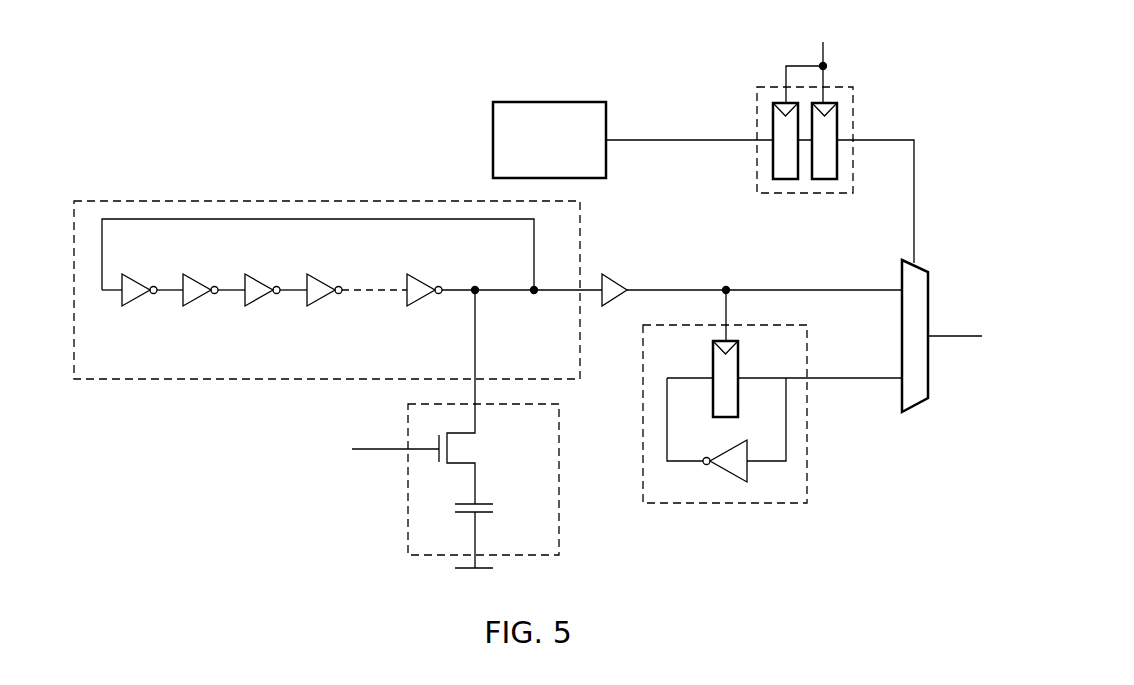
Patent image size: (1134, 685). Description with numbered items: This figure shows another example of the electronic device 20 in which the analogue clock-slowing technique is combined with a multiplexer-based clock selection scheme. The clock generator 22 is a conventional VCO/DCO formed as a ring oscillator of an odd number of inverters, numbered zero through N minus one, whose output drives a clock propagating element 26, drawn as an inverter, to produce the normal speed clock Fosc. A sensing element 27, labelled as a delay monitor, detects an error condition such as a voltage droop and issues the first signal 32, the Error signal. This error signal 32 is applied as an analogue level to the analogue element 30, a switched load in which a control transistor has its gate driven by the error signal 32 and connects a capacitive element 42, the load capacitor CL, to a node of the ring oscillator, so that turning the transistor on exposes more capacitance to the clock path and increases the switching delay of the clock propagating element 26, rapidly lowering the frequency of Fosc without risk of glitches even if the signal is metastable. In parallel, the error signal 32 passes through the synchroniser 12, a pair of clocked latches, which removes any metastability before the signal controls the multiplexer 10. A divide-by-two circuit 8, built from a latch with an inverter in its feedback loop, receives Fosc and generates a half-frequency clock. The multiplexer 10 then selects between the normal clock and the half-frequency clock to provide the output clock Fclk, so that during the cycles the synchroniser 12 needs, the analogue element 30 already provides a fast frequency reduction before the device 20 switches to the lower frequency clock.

The electronic device 20 is at (130, 178).
The clock generator 22 is at (234, 200).
The clock propagating element 26 is at (614, 280).
The sensing element 27 is at (551, 102).
The first signal 32 is at (698, 143).
The synchroniser 12 is at (854, 110).
The divide-by-2 circuit 8 is at (808, 447).
The multiplexer 10 is at (930, 360).
The analogue element 30 is at (560, 512).
The capacitive element 42 is at (455, 507).